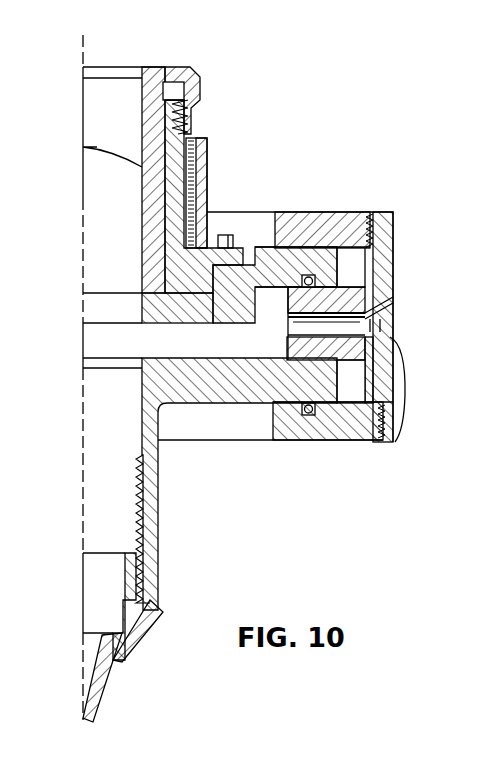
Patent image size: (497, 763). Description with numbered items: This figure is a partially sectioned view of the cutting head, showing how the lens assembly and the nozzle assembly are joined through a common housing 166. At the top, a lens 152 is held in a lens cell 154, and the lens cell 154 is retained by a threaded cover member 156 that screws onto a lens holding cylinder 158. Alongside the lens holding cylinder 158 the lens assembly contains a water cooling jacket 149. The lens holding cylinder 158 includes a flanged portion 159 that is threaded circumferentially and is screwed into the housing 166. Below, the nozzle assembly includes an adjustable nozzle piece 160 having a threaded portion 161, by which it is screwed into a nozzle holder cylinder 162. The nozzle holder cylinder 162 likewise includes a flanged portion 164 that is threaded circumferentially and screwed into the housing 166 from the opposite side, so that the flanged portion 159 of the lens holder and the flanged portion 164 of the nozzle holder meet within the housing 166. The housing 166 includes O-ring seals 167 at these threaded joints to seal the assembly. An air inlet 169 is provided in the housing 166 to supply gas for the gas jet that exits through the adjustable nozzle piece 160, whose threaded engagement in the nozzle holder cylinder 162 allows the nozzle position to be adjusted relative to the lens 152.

The water cooling jacket 149 is at (207, 165).
The lens 152 is at (100, 153).
The lens cell 154 is at (142, 213).
The threaded cover member 156 is at (200, 80).
The lens holding cylinder 158 is at (178, 102).
The flanged portion 159 is at (262, 283).
The adjustable nozzle piece 160 is at (107, 697).
The threaded portion 161 is at (125, 593).
The nozzle holder cylinder 162 is at (158, 553).
The flanged portion 164 is at (222, 403).
The housing 166 is at (395, 237).
The O-ring seals 167 is at (309, 275).
The air inlet 169 is at (395, 442).